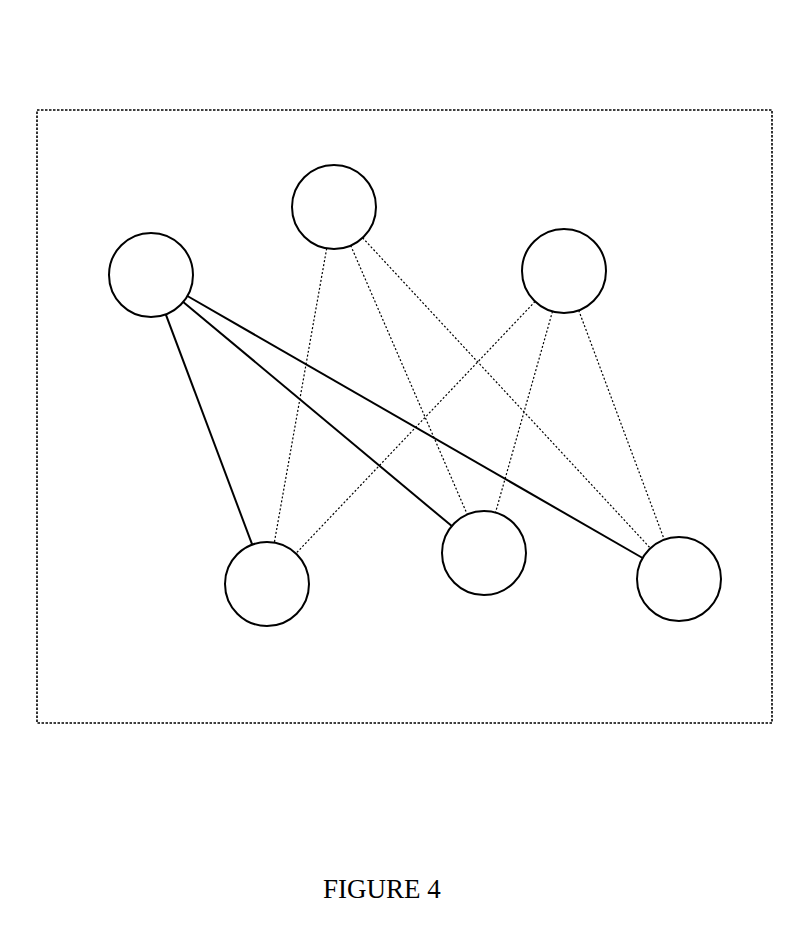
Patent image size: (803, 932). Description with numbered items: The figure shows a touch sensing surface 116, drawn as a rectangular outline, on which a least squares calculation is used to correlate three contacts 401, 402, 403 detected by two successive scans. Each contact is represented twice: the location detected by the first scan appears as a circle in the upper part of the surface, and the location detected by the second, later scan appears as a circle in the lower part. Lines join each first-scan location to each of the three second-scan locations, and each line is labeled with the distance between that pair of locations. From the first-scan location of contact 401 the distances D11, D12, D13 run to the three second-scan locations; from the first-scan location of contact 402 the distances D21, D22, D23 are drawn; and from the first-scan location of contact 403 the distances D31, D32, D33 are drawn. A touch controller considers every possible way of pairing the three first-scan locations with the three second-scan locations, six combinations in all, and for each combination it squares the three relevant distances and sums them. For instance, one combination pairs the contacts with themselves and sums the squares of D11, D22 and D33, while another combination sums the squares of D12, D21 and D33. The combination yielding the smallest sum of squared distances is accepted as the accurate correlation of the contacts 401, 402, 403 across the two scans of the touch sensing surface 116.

The touch sensing surface 116 is at (593, 98).
The contact 401 is at (209, 429).
The contact 402 is at (409, 380).
The contact 403 is at (621, 425).
The distance D11 is at (209, 429).
The distance D12 is at (317, 414).
The distance D13 is at (414, 427).
The distance D21 is at (305, 395).
The distance D22 is at (409, 380).
The distance D23 is at (507, 393).
The distance D31 is at (415, 428).
The distance D32 is at (526, 411).
The distance D33 is at (622, 424).